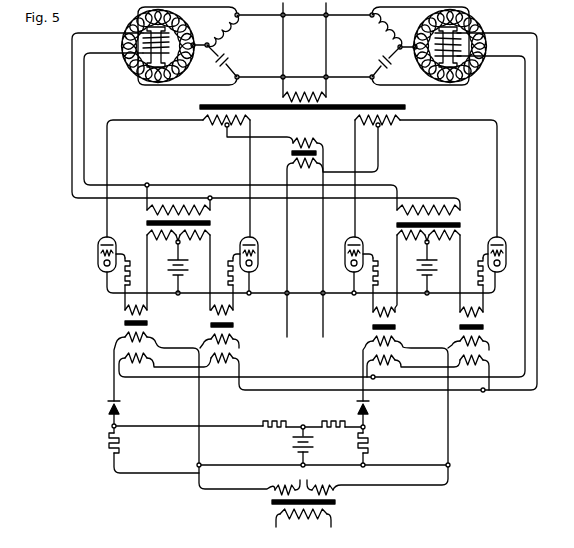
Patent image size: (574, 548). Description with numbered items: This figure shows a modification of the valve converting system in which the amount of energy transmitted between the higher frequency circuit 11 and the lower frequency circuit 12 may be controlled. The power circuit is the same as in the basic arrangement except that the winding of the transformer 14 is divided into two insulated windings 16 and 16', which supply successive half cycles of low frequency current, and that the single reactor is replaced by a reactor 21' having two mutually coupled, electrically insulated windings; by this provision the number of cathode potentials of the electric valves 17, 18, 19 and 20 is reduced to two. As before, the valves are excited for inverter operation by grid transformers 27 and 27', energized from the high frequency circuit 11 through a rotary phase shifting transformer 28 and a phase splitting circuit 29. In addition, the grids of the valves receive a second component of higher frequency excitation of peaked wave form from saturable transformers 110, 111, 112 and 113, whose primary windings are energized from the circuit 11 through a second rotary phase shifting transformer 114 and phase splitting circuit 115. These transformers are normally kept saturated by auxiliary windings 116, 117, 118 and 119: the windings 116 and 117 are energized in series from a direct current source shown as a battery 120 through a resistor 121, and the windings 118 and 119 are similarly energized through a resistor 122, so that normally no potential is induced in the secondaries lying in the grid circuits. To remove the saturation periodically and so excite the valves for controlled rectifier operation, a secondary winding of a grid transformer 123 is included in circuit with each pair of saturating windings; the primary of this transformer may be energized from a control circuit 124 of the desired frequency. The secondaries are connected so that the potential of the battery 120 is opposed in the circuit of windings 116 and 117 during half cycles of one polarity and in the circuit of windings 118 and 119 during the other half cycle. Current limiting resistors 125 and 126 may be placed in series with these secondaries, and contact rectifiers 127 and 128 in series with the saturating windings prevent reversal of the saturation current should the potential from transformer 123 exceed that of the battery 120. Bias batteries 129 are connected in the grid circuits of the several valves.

The high frequency circuit 11 is at (325, 60).
The lower frequency circuit 12 is at (289, 312).
The transformer 14 is at (200, 107).
The transformer winding 16 is at (241, 122).
The transformer winding 16' is at (364, 122).
The electric valve 17 is at (98, 247).
The electric valve 18 is at (347, 240).
The electric valve 19 is at (242, 244).
The electric valve 20 is at (489, 240).
The reactor 21' is at (288, 153).
The grid transformer 27 is at (161, 223).
The grid transformer 27' is at (412, 223).
The rotary phase shifting transformer 28 is at (138, 68).
The phase splitting circuit 29 is at (224, 30).
The saturable transformer 110 is at (125, 323).
The saturable transformer 111 is at (211, 325).
The saturable transformer 112 is at (373, 326).
The saturable transformer 113 is at (460, 327).
The rotary phase shifting transformer 114 is at (480, 70).
The phase splitting circuit 115 is at (385, 60).
The auxiliary winding 116 is at (119, 344).
The auxiliary winding 117 is at (238, 349).
The auxiliary winding 118 is at (368, 345).
The auxiliary winding 119 is at (489, 349).
The battery 120 is at (292, 446).
The resistor 121 is at (277, 421).
The resistor 122 is at (337, 421).
The grid transformer 123 is at (336, 502).
The circuit 124 is at (321, 535).
The current limiting resistor 125 is at (108, 444).
The current limiting resistor 126 is at (369, 443).
The contact rectifier 127 is at (107, 404).
The contact rectifier 128 is at (370, 404).
The bias battery 129 is at (174, 278).